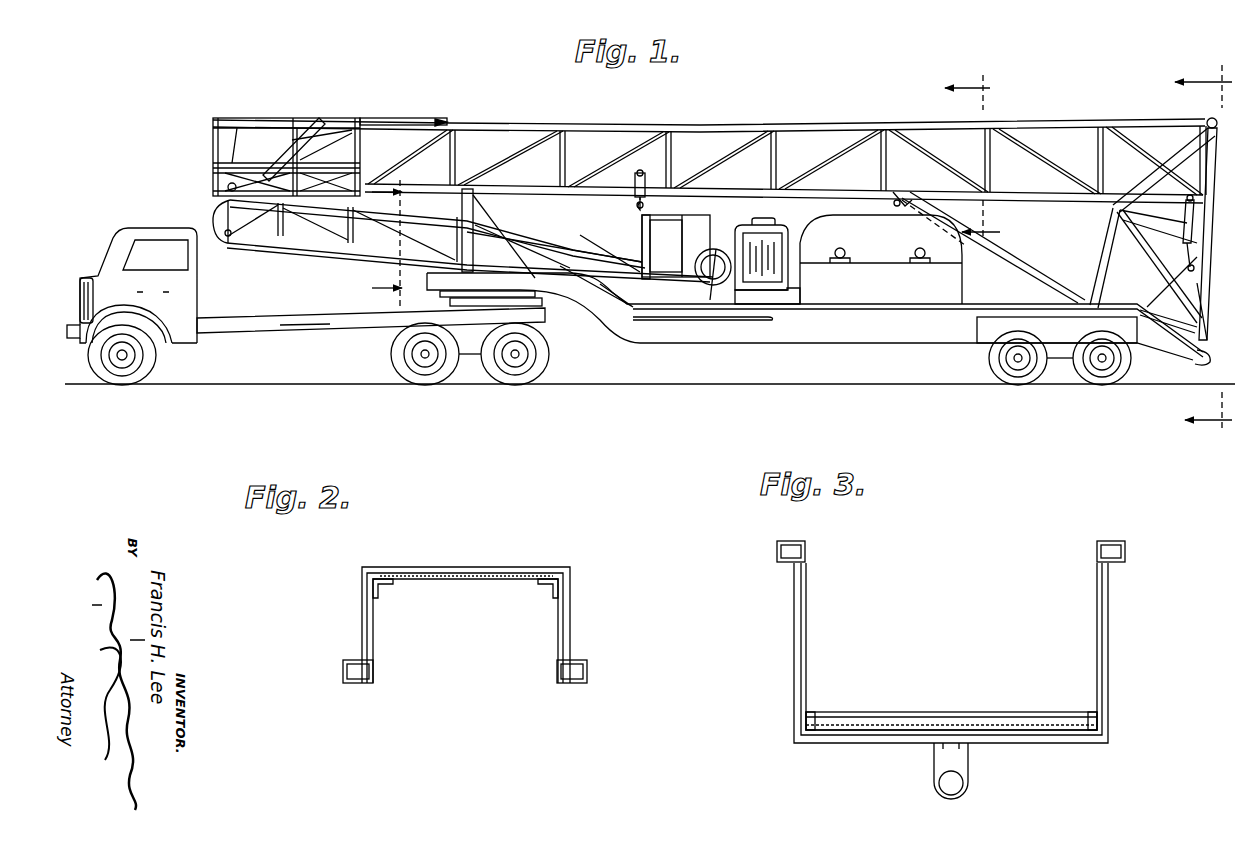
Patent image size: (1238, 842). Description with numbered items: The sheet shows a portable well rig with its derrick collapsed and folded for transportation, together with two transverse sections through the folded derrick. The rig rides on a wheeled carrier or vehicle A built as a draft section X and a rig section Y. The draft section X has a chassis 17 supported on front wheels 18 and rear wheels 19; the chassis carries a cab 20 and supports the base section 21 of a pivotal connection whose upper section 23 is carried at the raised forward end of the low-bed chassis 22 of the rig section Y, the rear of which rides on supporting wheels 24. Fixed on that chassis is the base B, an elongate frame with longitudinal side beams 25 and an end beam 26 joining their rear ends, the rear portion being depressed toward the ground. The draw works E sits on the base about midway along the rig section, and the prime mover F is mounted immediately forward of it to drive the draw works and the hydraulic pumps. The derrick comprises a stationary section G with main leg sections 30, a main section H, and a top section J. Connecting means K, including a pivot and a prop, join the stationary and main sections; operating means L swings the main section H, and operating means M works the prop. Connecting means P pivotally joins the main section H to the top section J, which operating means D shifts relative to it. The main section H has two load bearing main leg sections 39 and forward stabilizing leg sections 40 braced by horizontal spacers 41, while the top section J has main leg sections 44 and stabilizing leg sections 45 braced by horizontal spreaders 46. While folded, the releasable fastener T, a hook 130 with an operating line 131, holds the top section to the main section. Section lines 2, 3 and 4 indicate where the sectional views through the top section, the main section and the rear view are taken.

In FIG. 1, the wheeled carrier or vehicle A is at (176, 230).
In FIG. 1, the cab 20 is at (153, 292).
In FIG. 1, the front wheels 18 is at (122, 385).
In FIG. 1, the chassis 17 is at (328, 330).
In FIG. 1, the draft section X is at (284, 325).
In FIG. 1, the rear wheels 19 is at (410, 383).
In FIG. 1, the upper section of the pivotal connection 23 is at (480, 287).
In FIG. 1, the base section of the pivotal connection 21 is at (505, 300).
In FIG. 1, the base B is at (818, 327).
In FIG. 1, the longitudinal side beams 25 is at (746, 312).
In FIG. 1, the chassis 22 is at (924, 342).
In FIG. 1, the end beam 26 is at (1205, 355).
In FIG. 1, the rig section Y is at (790, 338).
In FIG. 1, the supporting wheels 24 is at (1068, 385).
In FIG. 1, the draw works E is at (882, 252).
In FIG. 1, the prime mover F is at (738, 222).
In FIG. 1, the releasable fastener T is at (633, 178).
In FIG. 1, the hook 130 is at (637, 204).
In FIG. 1, the operating line 131 is at (668, 170).
In FIG. 1, the top section J is at (312, 247).
In FIG. 2, the top section J is at (575, 632).
In FIG. 1, the main section H is at (832, 120).
In FIG. 3, the main section H is at (792, 641).
In FIG. 1, the main leg sections 39 is at (920, 121).
In FIG. 3, the main leg sections 39 is at (803, 544).
In FIG. 1, the stabilizing leg sections 40 is at (1020, 191).
In FIG. 3, the stabilizing leg sections 40 is at (810, 717).
In FIG. 1, the operating means D is at (322, 128).
In FIG. 1, the connecting means P is at (228, 187).
In FIG. 1, the section line 2— 2 is at (400, 243).
In FIG. 1, the section line 3— 3 is at (977, 154).
In FIG. 1, the section line 4— 4 is at (1201, 243).
In FIG. 1, the connecting means K is at (1205, 121).
In FIG. 1, the stationary section G is at (1102, 270).
In FIG. 1, the operating means M is at (1160, 258).
In FIG. 1, the operating means L is at (1012, 266).
In FIG. 1, the main leg sections 30 is at (1077, 308).
In FIG. 2, the horizontal spreaders 46 is at (495, 568).
In FIG. 2, the stabilizing leg sections 45 is at (383, 590).
In FIG. 2, the main leg sections 44 is at (358, 683).
In FIG. 3, the horizontal spacers 41 is at (1110, 646).